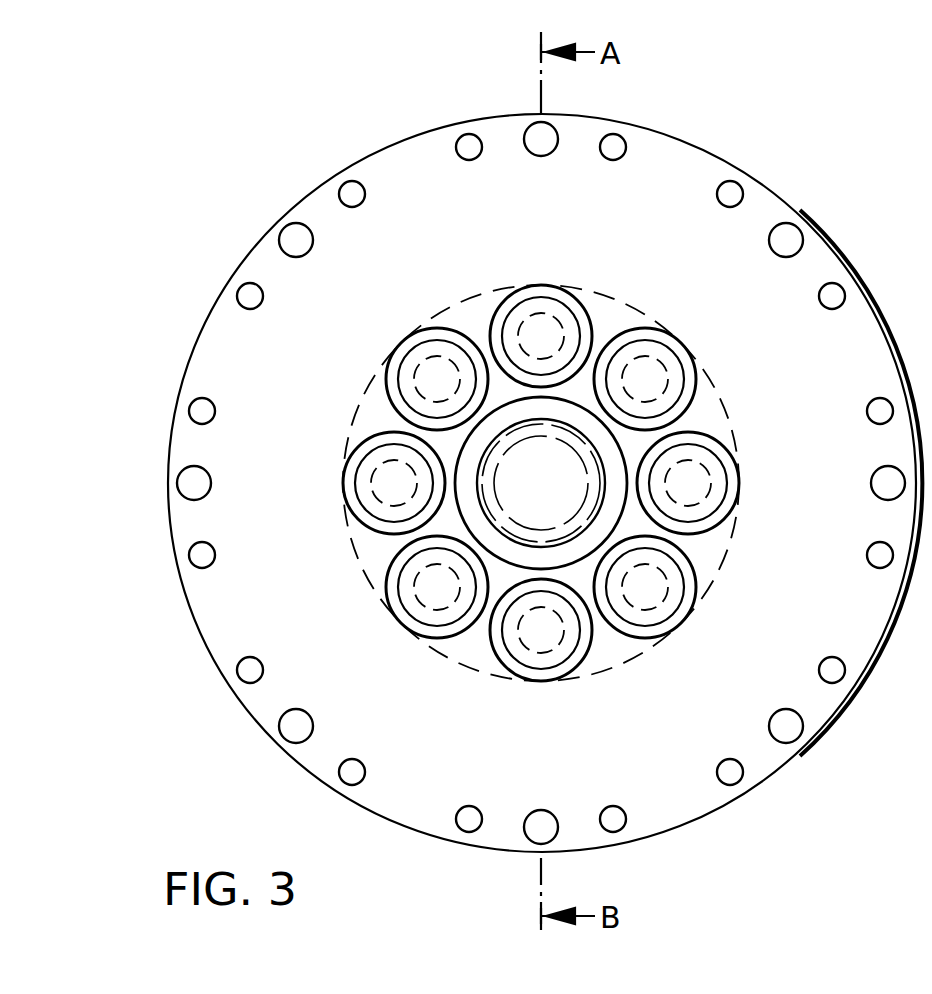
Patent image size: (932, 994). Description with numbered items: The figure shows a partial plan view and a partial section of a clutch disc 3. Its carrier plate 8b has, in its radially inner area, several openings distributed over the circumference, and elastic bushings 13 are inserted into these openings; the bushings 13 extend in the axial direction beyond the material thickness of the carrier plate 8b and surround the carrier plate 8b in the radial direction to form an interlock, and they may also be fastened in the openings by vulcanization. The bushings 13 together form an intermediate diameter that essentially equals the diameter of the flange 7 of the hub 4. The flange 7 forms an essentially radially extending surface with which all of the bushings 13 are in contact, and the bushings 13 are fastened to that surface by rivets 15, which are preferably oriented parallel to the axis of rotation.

The clutch disc 3 is at (545, 467).
The carrier plate 8b is at (659, 186).
The flange 7 is at (733, 541).
The hub 4 is at (613, 453).
The elastic bushings 13 is at (688, 362).
The rivets 15 is at (681, 381).